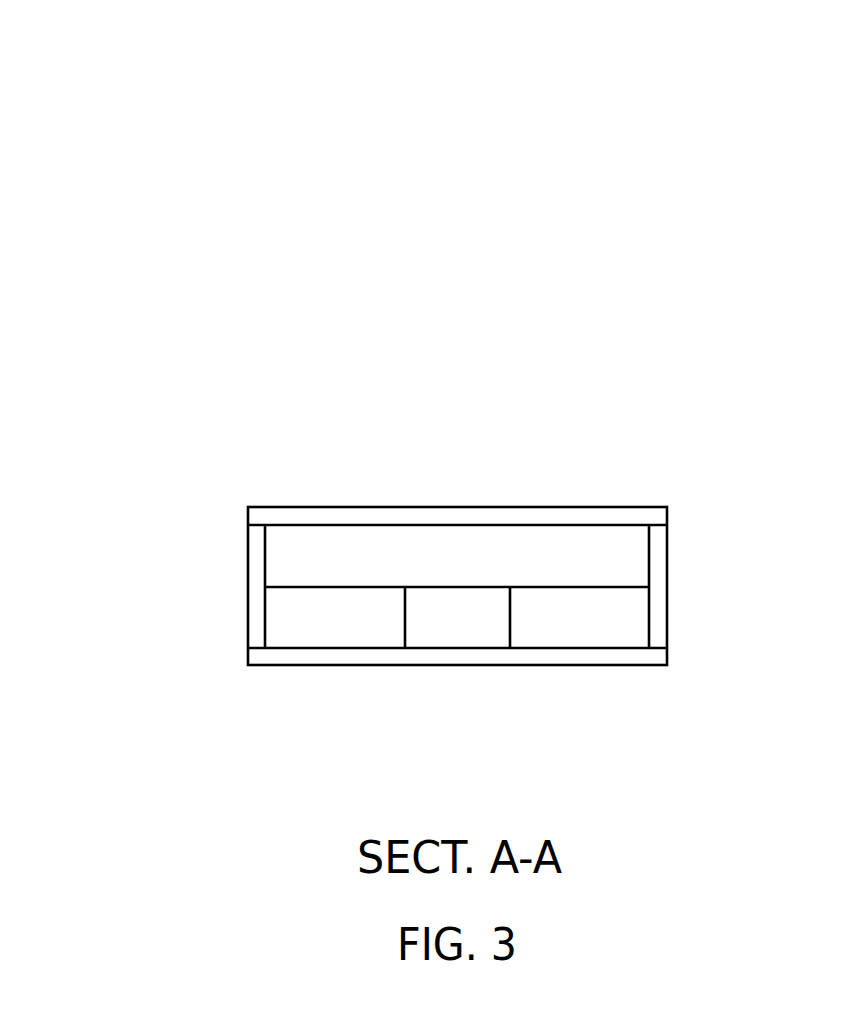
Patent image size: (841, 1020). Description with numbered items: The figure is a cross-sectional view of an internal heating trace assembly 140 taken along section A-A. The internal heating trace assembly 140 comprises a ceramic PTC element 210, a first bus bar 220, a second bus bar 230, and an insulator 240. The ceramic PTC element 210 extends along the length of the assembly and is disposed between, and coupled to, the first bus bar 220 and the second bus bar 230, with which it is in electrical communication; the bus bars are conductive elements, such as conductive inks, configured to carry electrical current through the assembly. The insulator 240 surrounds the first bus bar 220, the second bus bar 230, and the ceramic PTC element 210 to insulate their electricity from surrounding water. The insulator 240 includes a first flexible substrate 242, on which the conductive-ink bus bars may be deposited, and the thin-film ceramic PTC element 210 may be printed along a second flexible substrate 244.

The internal heating trace assembly 140 is at (358, 172).
The ceramic PTC element 210 is at (448, 560).
The first bus bar 220 is at (320, 613).
The second bus bar 230 is at (598, 630).
The insulator 240 is at (246, 535).
The first flexible substrate 242 is at (295, 663).
The second flexible substrate 244 is at (318, 517).